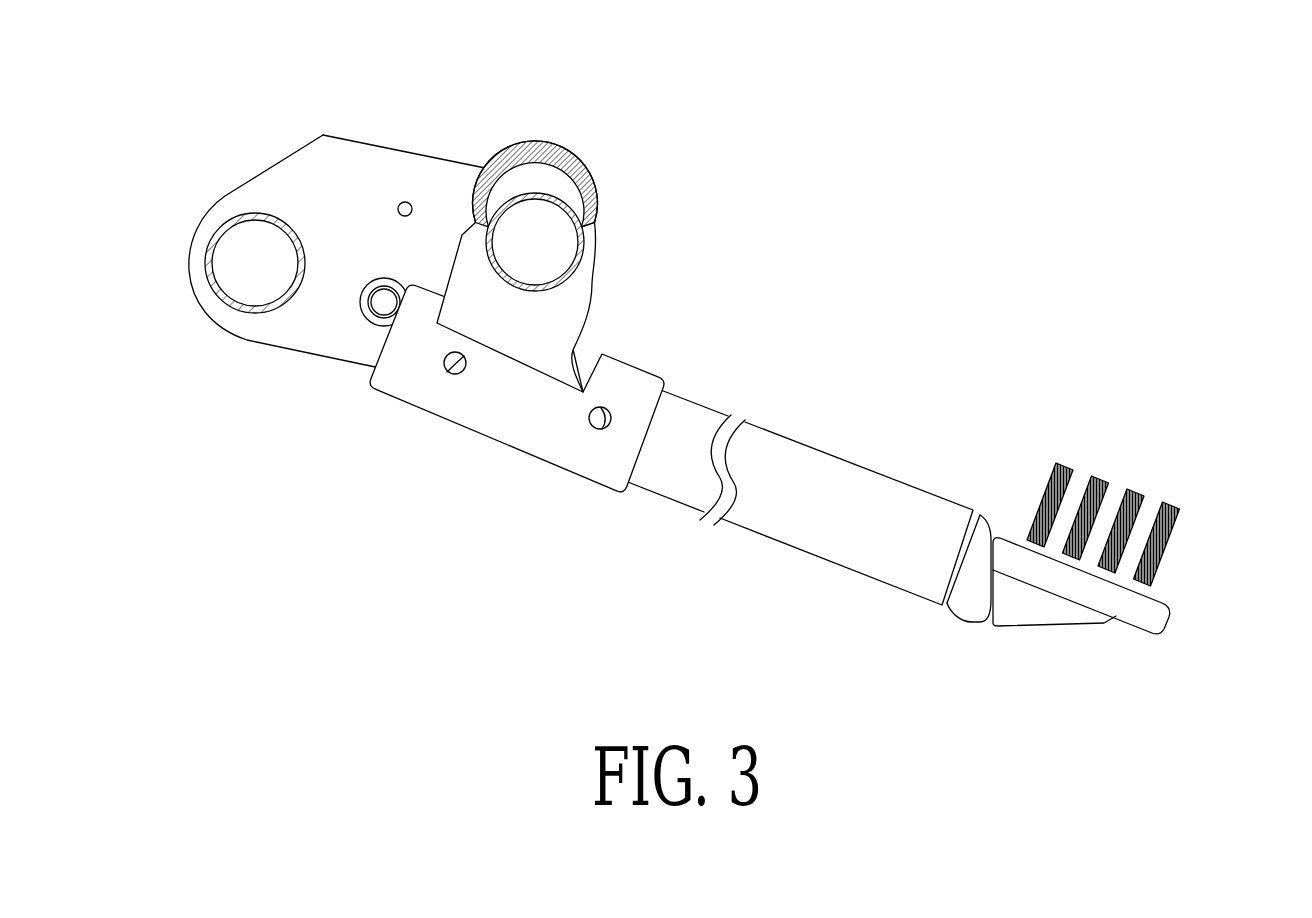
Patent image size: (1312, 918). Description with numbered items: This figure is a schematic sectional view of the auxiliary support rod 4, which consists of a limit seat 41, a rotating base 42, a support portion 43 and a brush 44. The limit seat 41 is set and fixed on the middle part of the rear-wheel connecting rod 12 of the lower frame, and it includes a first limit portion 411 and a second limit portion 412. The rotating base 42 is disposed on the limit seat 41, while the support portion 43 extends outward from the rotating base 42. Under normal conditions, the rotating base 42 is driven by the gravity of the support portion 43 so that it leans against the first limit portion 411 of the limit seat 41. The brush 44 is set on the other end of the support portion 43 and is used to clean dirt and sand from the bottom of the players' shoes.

The auxiliary support rod 4 is at (822, 396).
The rear-wheel connecting rod 12 is at (580, 238).
The limit seat 41 is at (560, 229).
The first limit portion 411 is at (462, 234).
The second limit portion 412 is at (595, 221).
The rotating base 42 is at (563, 308).
The support portion 43 is at (873, 558).
The brush 44 is at (1157, 602).